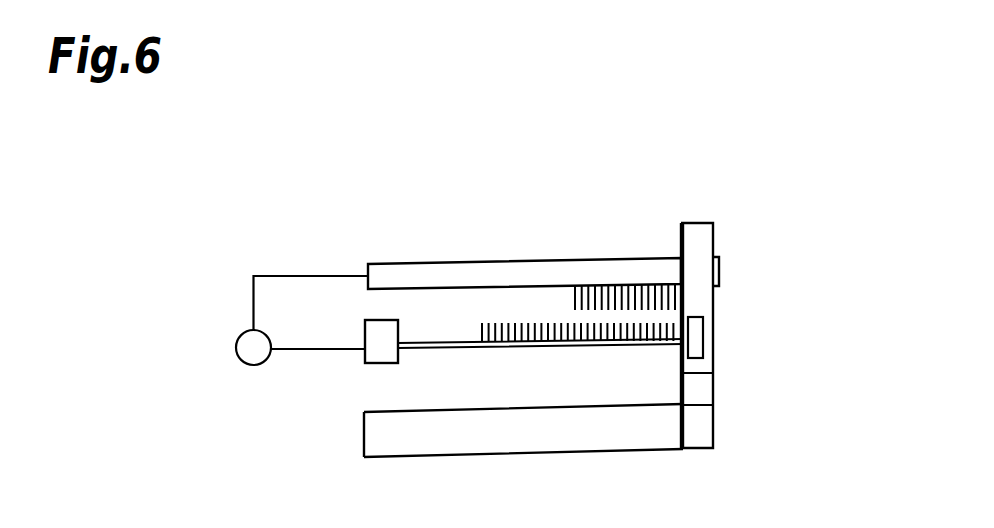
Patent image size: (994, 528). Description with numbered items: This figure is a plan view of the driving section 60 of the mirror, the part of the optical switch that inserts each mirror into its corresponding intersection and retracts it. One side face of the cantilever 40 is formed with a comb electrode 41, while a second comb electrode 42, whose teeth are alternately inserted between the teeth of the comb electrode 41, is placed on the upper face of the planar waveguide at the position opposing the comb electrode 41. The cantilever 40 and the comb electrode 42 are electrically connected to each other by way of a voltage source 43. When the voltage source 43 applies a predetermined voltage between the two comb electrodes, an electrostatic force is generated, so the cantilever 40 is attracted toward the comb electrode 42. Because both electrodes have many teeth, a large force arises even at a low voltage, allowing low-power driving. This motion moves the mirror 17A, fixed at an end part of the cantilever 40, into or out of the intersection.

The driving section 60 is at (737, 142).
The comb electrode 41 is at (476, 338).
The comb electrode 42 is at (569, 304).
The cantilever 40 is at (438, 351).
The mirror 17A is at (703, 327).
The voltage source 43 is at (253, 365).